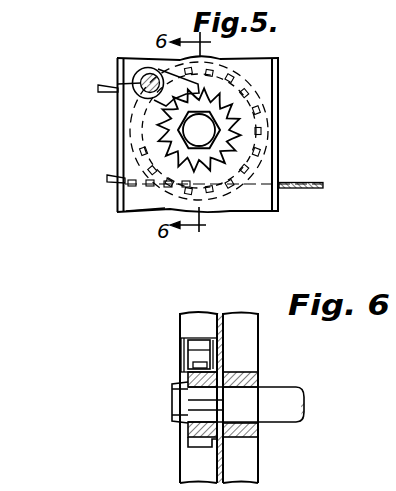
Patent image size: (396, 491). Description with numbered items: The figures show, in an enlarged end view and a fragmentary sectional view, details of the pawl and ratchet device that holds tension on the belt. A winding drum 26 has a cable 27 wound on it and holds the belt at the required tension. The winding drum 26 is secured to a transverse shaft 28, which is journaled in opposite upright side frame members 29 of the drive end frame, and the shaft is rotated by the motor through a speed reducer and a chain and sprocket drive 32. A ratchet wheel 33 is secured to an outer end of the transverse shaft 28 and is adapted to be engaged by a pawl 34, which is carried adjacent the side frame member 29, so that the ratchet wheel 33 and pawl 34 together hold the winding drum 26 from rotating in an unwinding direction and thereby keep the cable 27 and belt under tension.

In FIG. 5, the winding drum 26 is at (274, 143).
In FIG. 5, the cable 27 is at (311, 184).
In FIG. 5, the transverse shaft 28 is at (208, 126).
In FIG. 6, the transverse shaft 28 is at (280, 390).
In FIG. 5, the upright side frame member 29 is at (120, 153).
In FIG. 6, the upright side frame member 29 is at (180, 328).
In FIG. 5, the chain and sprocket drive 32 is at (146, 190).
In FIG. 5, the ratchet wheel 33 is at (221, 100).
In FIG. 6, the ratchet wheel 33 is at (190, 442).
In FIG. 5, the pawl 34 is at (152, 68).
In FIG. 6, the pawl 34 is at (197, 352).